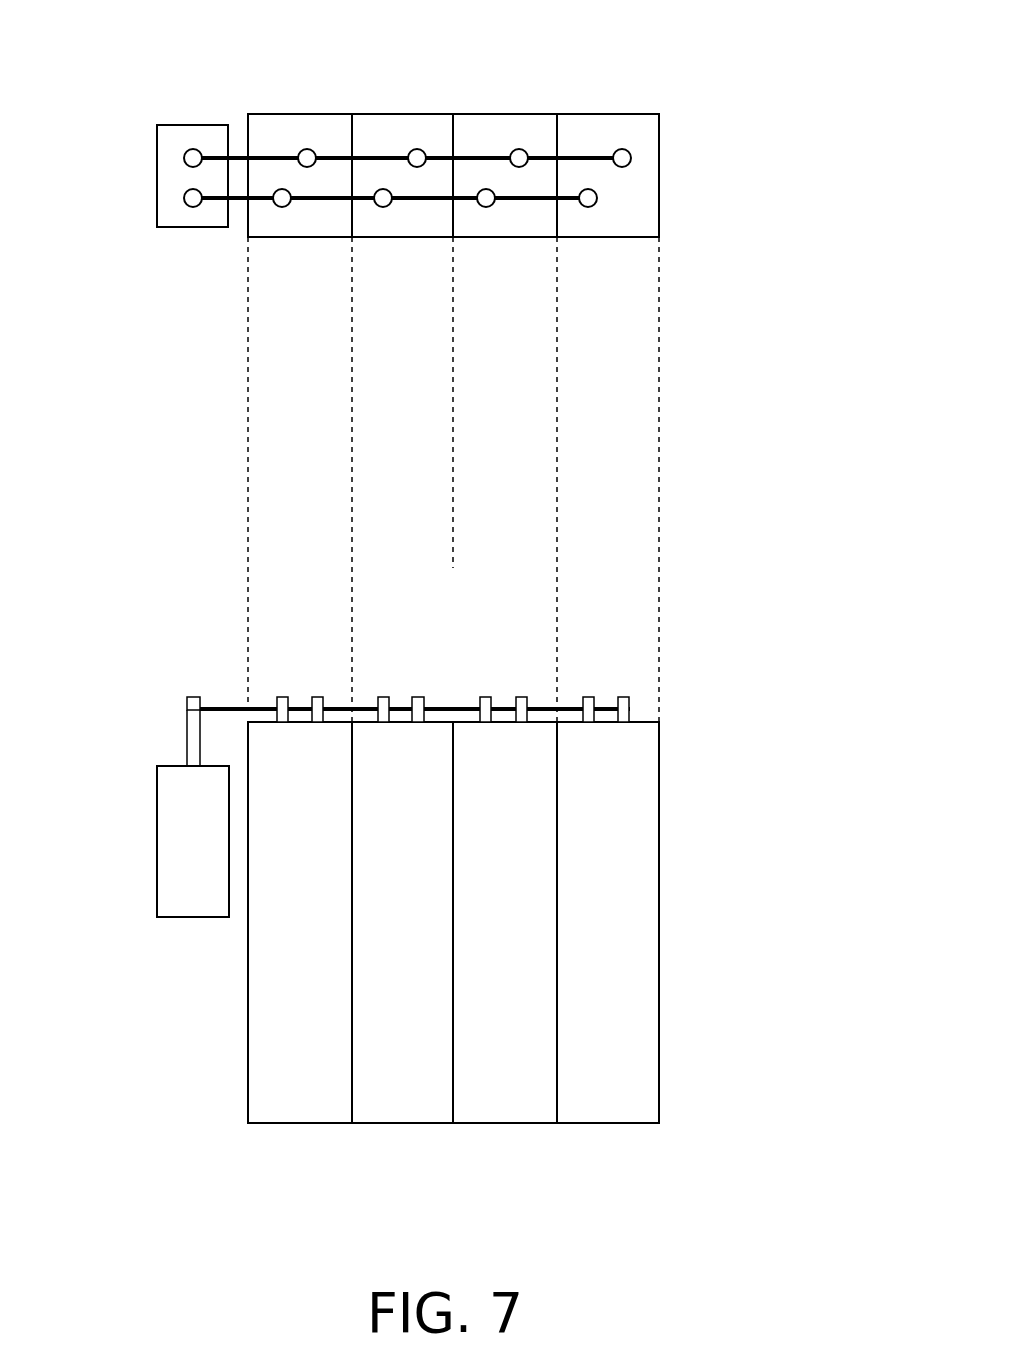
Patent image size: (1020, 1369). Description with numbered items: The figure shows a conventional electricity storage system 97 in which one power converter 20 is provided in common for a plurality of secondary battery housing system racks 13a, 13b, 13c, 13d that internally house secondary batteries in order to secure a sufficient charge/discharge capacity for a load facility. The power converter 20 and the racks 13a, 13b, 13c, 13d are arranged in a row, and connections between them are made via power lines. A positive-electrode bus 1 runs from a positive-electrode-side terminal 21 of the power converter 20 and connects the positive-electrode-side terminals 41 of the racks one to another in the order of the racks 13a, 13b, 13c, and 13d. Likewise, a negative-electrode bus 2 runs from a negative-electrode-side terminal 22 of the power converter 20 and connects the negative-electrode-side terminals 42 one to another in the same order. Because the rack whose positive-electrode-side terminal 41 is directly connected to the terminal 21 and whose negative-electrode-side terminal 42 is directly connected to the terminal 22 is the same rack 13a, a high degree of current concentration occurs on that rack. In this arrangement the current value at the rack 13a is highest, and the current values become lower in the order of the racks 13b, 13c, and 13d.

The electricity storage system 97 is at (738, 88).
The positive-electrode bus 1 is at (221, 152).
The negative-electrode bus 2 is at (222, 208).
The secondary battery housing system rack 13a is at (318, 132).
The secondary battery housing system rack 13b is at (432, 132).
The secondary battery housing system rack 13c is at (534, 132).
The secondary battery housing system rack 13d is at (637, 132).
The power converter 20 is at (170, 177).
The positive-electrode-side terminal 21 is at (192, 148).
The negative-electrode-side terminal 22 is at (193, 208).
The positive-electrode-side terminal 41 is at (301, 150).
The negative-electrode-side terminal 42 is at (288, 206).